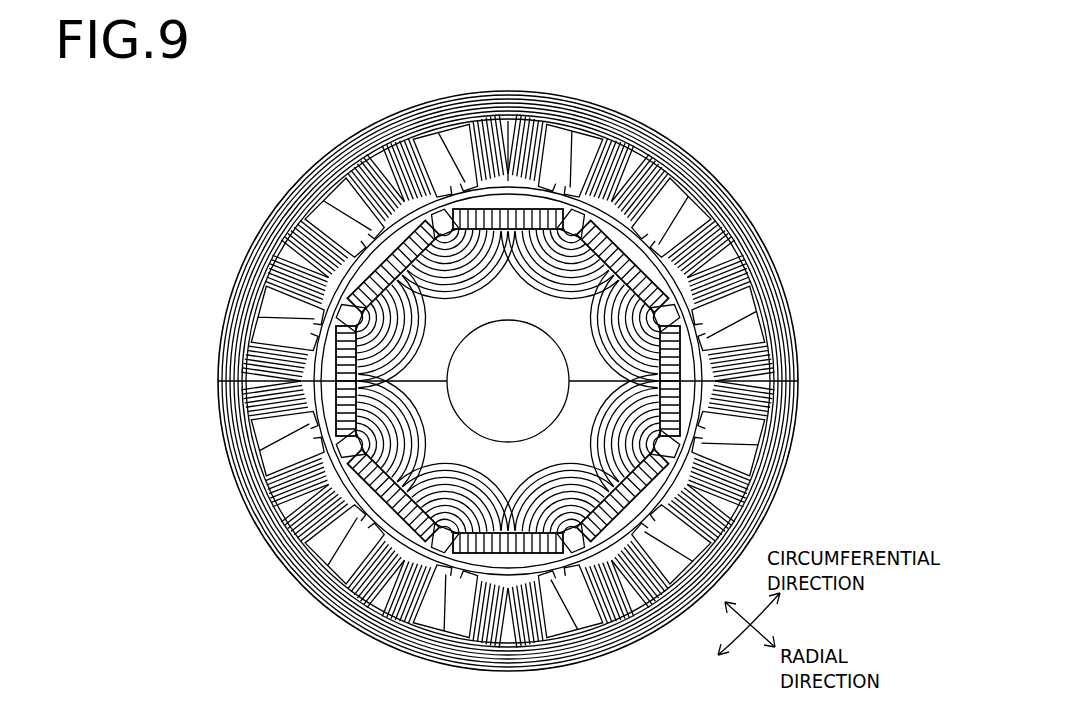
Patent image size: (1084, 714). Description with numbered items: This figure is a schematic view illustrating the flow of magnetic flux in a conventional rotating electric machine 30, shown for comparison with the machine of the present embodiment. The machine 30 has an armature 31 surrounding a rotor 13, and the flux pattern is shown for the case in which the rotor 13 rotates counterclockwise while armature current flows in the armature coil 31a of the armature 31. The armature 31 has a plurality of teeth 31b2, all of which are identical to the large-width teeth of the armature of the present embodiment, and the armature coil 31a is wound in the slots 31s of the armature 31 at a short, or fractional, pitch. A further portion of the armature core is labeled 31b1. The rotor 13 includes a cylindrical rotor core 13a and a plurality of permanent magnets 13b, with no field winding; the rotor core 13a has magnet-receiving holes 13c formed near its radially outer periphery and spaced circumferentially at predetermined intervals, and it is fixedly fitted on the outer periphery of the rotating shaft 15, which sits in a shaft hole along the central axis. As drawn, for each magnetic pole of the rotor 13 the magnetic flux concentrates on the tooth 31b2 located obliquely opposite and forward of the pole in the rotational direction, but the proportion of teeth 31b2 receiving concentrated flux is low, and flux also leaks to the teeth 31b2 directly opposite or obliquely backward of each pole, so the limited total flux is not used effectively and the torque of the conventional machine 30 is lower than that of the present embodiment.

The conventional rotating electric machine 30 is at (300, 168).
The armature 31 is at (850, 150).
The armature coil 31a is at (352, 198).
The stator core yoke portion 31b1 is at (640, 230).
The teeth 31b2 is at (325, 330).
The slots 31s is at (743, 277).
The rotor 13 is at (295, 673).
The rotor core 13a is at (407, 417).
The permanent magnets 13b is at (350, 368).
The magnet-receiving holes 13c is at (677, 427).
The rotating shaft 15 is at (510, 400).